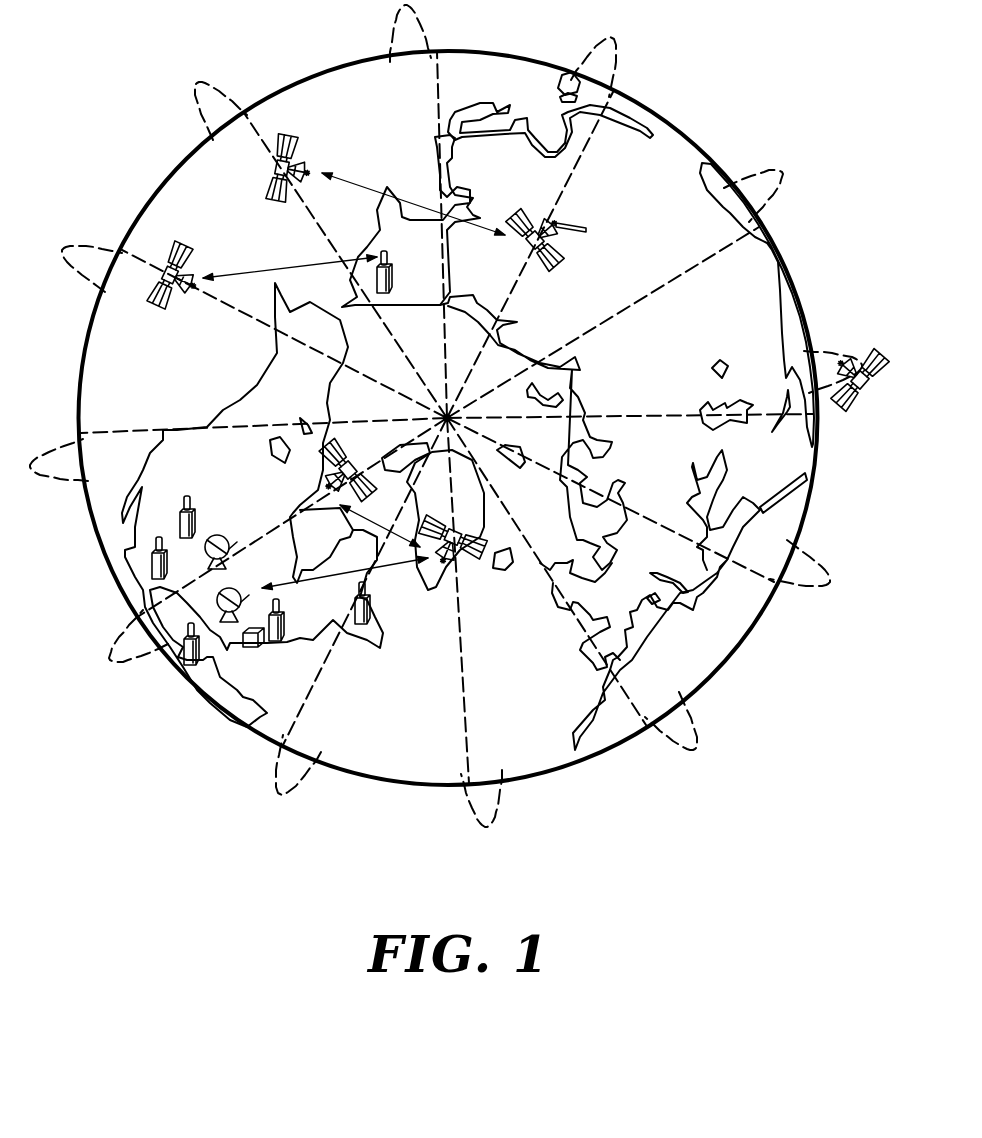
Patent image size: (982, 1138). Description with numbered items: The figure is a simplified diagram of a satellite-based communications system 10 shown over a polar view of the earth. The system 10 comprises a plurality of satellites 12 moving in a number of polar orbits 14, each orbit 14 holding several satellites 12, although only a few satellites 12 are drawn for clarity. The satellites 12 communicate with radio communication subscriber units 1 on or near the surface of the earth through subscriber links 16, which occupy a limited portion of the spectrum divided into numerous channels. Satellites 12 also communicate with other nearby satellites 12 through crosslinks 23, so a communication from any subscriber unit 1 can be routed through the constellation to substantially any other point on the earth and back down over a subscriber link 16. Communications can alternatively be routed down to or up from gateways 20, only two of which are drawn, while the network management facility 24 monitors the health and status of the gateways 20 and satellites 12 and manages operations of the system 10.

The communications system 10 is at (462, 889).
The satellite 12 is at (290, 143).
The polar orbit 14 is at (205, 83).
The subscriber link 16 is at (268, 266).
The gateway 20 is at (219, 533).
The crosslink 23 is at (365, 188).
The network management facility 24 is at (250, 650).
The subscriber unit 1 is at (393, 285).